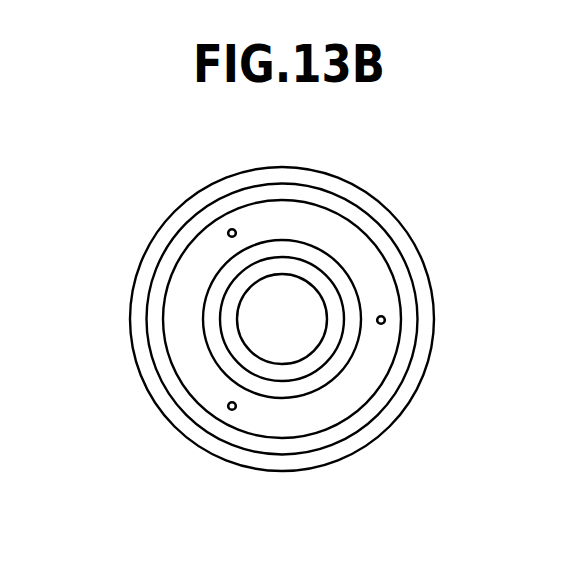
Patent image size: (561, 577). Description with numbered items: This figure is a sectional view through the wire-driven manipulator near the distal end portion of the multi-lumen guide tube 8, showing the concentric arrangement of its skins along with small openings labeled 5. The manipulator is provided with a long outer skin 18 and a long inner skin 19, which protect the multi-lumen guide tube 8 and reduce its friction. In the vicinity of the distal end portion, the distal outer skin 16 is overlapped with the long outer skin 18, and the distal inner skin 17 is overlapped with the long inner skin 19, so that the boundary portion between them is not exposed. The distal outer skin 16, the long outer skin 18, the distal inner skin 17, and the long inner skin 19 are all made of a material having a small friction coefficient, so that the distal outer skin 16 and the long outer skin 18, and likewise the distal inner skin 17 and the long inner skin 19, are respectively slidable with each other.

The screw hole 5 is at (230, 224).
The multi-lumen guide tube 8 is at (357, 250).
The distal outer skin 16 is at (138, 323).
The distal inner skin 17 is at (353, 337).
The long outer skin 18 is at (227, 433).
The long inner skin 19 is at (313, 367).